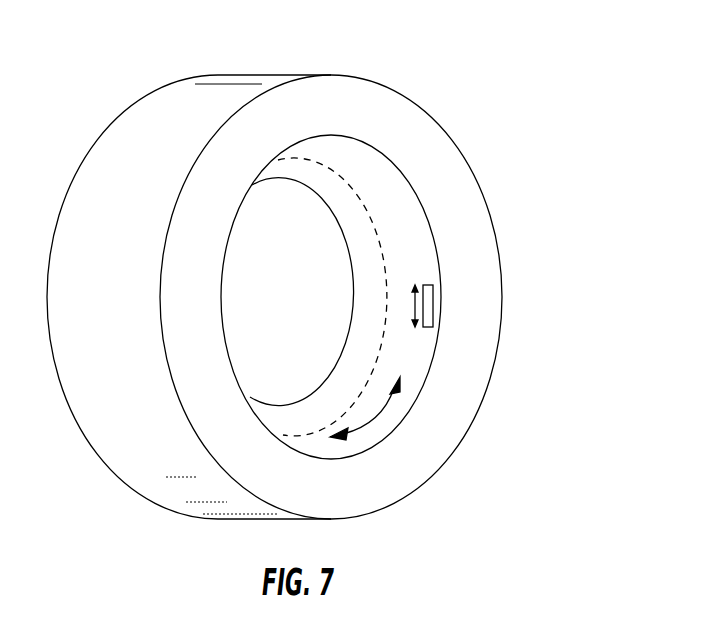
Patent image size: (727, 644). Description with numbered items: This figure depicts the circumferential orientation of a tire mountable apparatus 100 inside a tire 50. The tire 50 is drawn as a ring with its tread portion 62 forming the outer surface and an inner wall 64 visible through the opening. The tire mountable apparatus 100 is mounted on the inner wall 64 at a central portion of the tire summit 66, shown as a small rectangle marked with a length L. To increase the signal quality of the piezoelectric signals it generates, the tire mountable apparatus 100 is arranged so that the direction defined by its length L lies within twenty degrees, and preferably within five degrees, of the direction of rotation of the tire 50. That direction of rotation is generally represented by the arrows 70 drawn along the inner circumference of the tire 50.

The tire 50 is at (487, 202).
The tread portion 62 is at (168, 117).
The inner wall 64 is at (383, 186).
The tire summit 66 is at (417, 365).
The arrows 70 is at (375, 413).
The tire mountable apparatus 100 is at (433, 300).